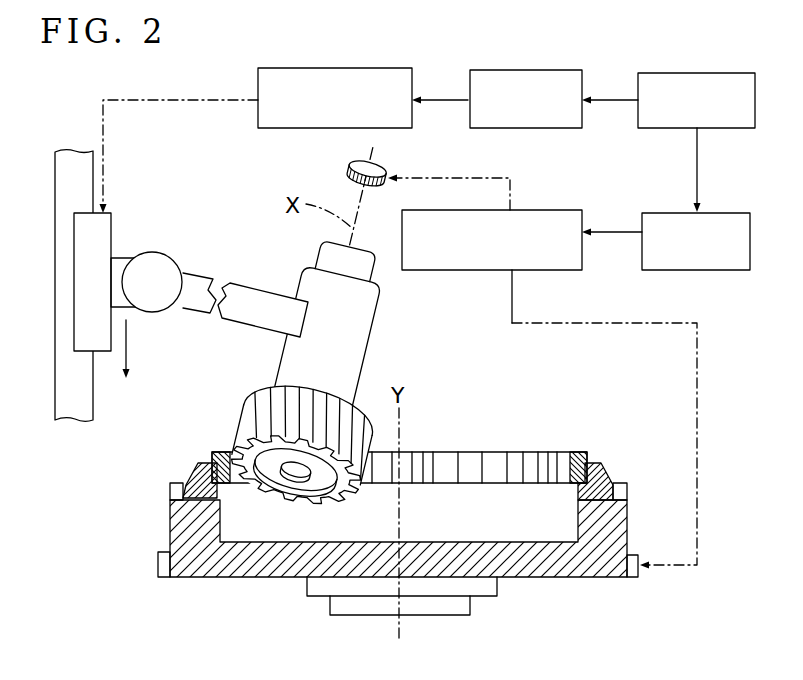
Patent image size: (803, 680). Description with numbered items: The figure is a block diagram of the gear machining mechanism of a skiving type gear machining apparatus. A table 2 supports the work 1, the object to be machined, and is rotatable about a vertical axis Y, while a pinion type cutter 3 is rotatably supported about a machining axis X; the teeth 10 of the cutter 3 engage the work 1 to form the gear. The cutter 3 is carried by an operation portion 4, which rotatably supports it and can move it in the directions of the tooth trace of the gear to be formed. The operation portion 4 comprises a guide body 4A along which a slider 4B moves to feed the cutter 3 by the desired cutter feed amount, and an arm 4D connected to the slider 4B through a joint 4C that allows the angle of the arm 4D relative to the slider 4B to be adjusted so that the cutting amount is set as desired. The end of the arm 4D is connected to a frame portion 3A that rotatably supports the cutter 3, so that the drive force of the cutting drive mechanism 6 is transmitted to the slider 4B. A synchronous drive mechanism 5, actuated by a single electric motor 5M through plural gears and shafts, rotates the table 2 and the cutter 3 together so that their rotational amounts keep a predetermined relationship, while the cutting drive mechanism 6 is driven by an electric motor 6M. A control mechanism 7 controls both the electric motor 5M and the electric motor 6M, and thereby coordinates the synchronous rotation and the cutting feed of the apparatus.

The work 1 is at (575, 452).
The table 2 is at (550, 578).
The pinion type cutter 3 is at (235, 424).
The frame portion 3A is at (366, 340).
The operation portion 4 is at (206, 233).
The guide body 4A is at (78, 422).
The slider 4B is at (110, 226).
The joint 4C is at (157, 256).
The arm 4D is at (238, 290).
The synchronous drive mechanism 5 is at (485, 270).
The electric motor 5M is at (698, 270).
The cutting drive mechanism 6 is at (258, 86).
The electric motor 6M is at (527, 128).
The control mechanism 7 is at (638, 88).
The tooth 10 is at (262, 402).